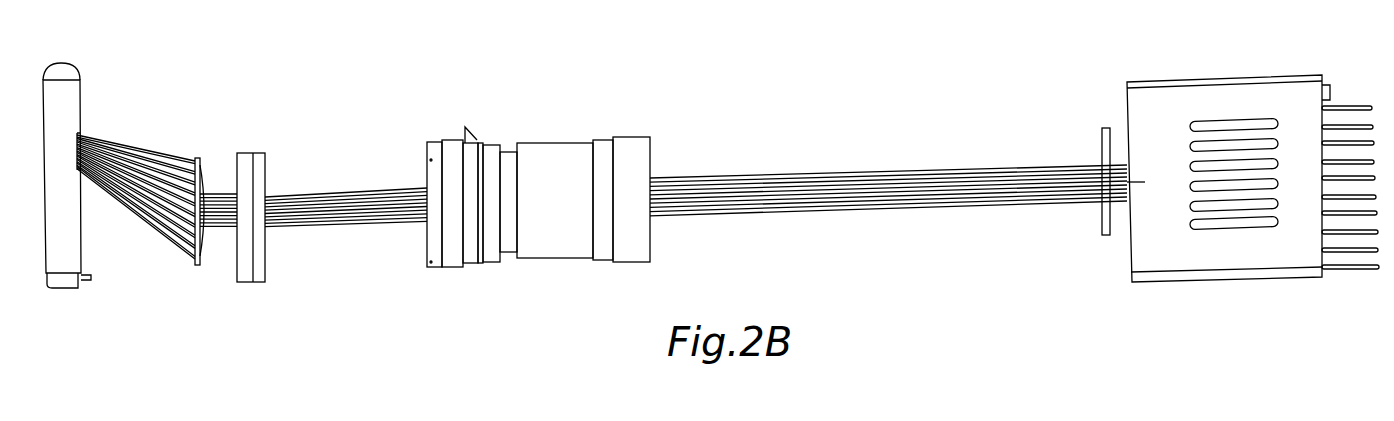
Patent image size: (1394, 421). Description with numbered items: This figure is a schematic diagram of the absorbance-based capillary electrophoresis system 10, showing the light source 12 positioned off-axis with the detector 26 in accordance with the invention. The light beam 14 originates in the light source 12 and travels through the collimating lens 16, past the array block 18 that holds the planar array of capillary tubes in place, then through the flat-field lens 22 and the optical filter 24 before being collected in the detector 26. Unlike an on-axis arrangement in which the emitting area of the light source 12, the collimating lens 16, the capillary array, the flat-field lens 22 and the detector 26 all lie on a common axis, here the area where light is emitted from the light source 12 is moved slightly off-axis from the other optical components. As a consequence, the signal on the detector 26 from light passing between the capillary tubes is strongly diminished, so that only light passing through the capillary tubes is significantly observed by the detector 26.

The absorbance-based capillary electrophoresis system 10 is at (437, 55).
The light source 12 is at (85, 250).
The light beam 14 is at (127, 141).
The collimating lens 16 is at (205, 258).
The array block 18 is at (255, 153).
The flat-field lens 22 is at (556, 260).
The optical filter 24 is at (1101, 137).
The detector 26 is at (1150, 249).